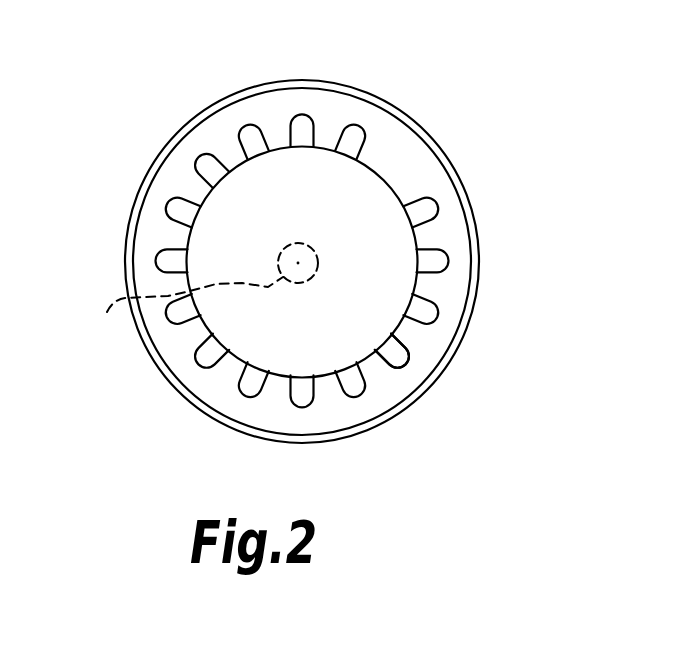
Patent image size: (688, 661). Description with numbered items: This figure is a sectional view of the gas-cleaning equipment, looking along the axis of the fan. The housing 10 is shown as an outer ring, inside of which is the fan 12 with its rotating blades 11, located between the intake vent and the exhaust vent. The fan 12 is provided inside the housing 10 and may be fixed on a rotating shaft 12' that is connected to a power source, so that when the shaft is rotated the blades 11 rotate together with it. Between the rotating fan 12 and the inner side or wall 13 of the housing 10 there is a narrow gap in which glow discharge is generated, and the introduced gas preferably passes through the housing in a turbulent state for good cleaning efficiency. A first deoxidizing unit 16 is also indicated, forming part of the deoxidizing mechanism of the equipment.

The housing 10 is at (383, 100).
The first deoxidizing unit 16 is at (450, 153).
The fan 12 is at (302, 262).
The rotating shaft 12' is at (175, 303).
The rotating blade 11 is at (437, 258).
The inner side or wall 13 is at (406, 377).